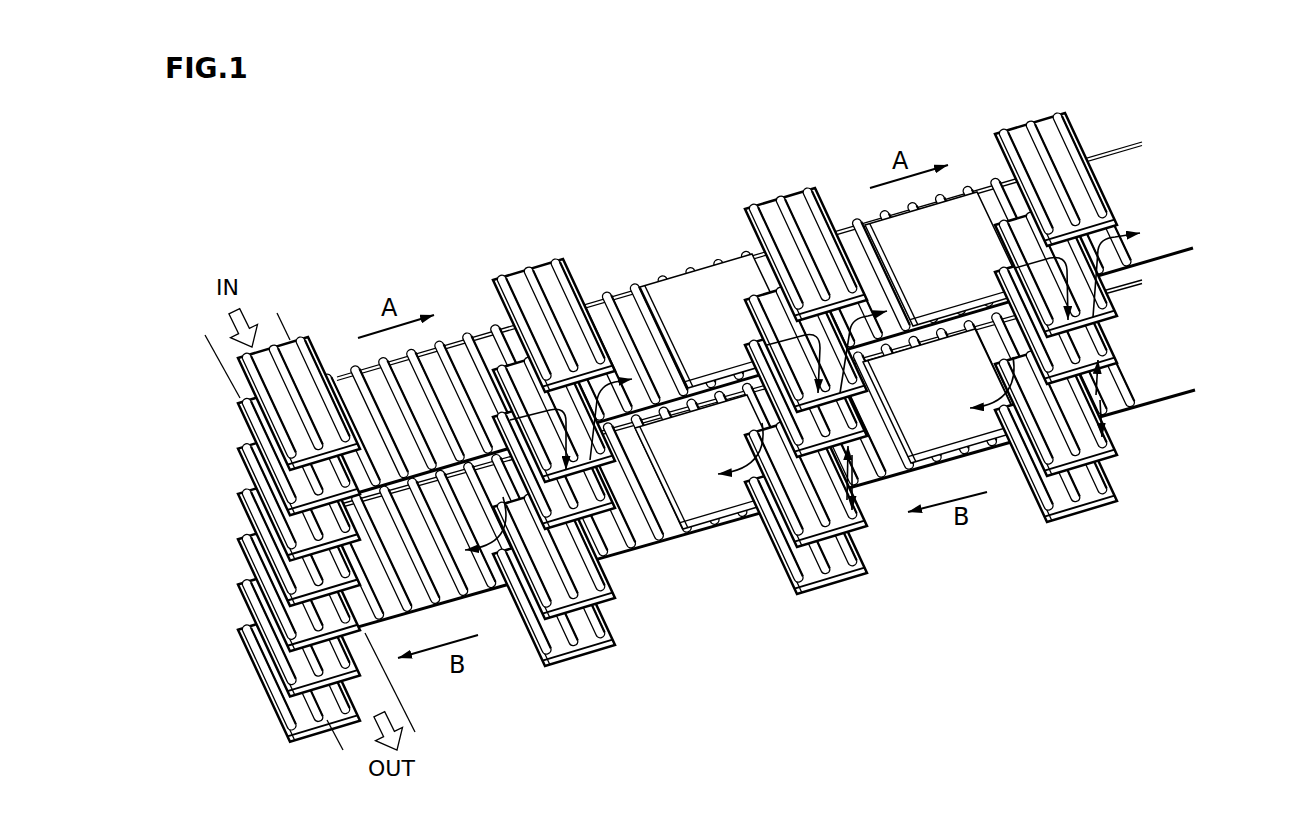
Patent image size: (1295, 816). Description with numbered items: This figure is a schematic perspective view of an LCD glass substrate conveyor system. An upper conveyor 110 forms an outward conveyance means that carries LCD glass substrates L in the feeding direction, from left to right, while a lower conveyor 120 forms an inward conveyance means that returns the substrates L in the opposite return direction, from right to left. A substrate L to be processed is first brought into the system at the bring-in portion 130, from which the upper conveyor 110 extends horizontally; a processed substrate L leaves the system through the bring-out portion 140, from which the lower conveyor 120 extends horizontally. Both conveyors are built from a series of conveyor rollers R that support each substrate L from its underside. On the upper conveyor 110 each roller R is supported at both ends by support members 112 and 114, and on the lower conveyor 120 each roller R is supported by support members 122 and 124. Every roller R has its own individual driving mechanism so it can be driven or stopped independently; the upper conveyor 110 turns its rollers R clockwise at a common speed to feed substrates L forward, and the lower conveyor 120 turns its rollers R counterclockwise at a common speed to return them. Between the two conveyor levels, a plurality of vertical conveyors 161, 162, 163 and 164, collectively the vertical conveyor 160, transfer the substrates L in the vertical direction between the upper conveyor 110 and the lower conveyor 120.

The upper conveyor 110 is at (792, 312).
The support member 112 is at (1199, 250).
The support member 114 is at (1147, 144).
The lower conveyor 120 is at (793, 447).
The support member 122 is at (1199, 394).
The support member 124 is at (1148, 283).
The bring-in portion 130 is at (238, 378).
The bring-out portion 140 is at (252, 683).
The vertical conveyor 160 is at (697, 464).
The vertical conveyor 161 is at (285, 576).
The vertical conveyor 162 is at (586, 668).
The vertical conveyor 163 is at (829, 599).
The vertical conveyor 164 is at (1086, 522).
The LCD glass substrate L is at (689, 284).
The conveyor roller R is at (1145, 404).